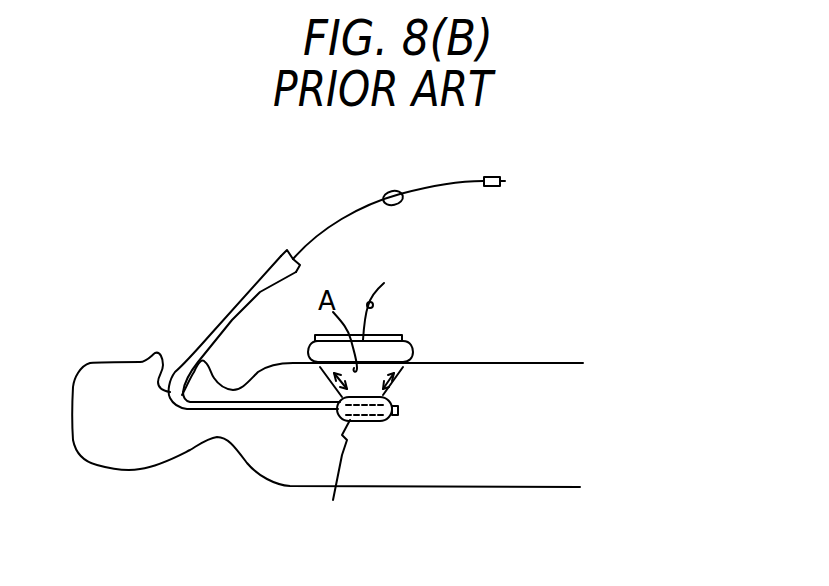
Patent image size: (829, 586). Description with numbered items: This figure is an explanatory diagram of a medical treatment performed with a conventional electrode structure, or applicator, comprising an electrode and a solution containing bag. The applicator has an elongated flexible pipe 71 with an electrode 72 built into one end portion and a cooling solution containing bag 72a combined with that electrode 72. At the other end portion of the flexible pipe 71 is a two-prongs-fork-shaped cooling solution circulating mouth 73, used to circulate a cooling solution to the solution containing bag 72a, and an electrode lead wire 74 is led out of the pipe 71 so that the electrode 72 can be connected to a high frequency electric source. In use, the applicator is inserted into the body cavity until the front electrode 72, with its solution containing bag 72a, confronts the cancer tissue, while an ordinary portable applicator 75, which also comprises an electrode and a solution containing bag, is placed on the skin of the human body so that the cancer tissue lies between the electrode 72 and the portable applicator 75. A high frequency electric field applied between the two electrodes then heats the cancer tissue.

The elongated flexible pipe 71 is at (189, 409).
The electrode 72 is at (371, 421).
The cooling solution containing bag 72a is at (344, 478).
The cooling solution circulating mouth 73 is at (287, 247).
The electrode lead wire 74 is at (463, 178).
The portable applicator 75 is at (383, 347).